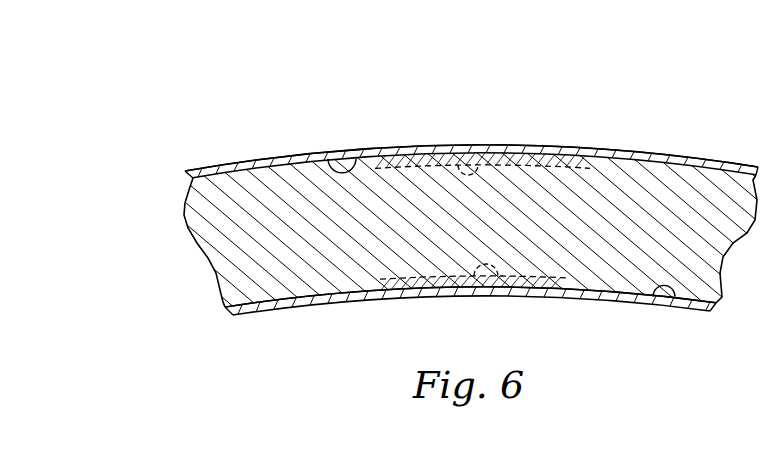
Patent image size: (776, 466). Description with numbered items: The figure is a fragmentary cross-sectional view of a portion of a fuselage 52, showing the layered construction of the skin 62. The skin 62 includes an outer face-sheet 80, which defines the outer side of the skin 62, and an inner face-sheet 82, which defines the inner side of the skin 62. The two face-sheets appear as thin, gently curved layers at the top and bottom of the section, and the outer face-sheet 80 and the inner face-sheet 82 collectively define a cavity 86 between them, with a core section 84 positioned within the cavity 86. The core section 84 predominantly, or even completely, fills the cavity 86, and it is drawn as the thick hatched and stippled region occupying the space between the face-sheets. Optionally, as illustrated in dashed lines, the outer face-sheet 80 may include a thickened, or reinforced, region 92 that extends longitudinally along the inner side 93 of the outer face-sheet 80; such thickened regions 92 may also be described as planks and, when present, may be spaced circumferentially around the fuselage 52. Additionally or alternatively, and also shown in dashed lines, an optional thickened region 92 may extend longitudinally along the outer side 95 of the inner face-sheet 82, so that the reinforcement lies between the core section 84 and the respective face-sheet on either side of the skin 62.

The fuselage 52 is at (625, 73).
The skin 62 is at (247, 157).
The outer face-sheet 80 is at (623, 153).
The inner face-sheet 82 is at (546, 300).
The core section 84 is at (458, 292).
The cavity 86 is at (356, 285).
The thickened region 92 is at (485, 163).
The inner side of the outer face-sheet 93 is at (324, 160).
The outer side of the inner face-sheet 95 is at (674, 303).